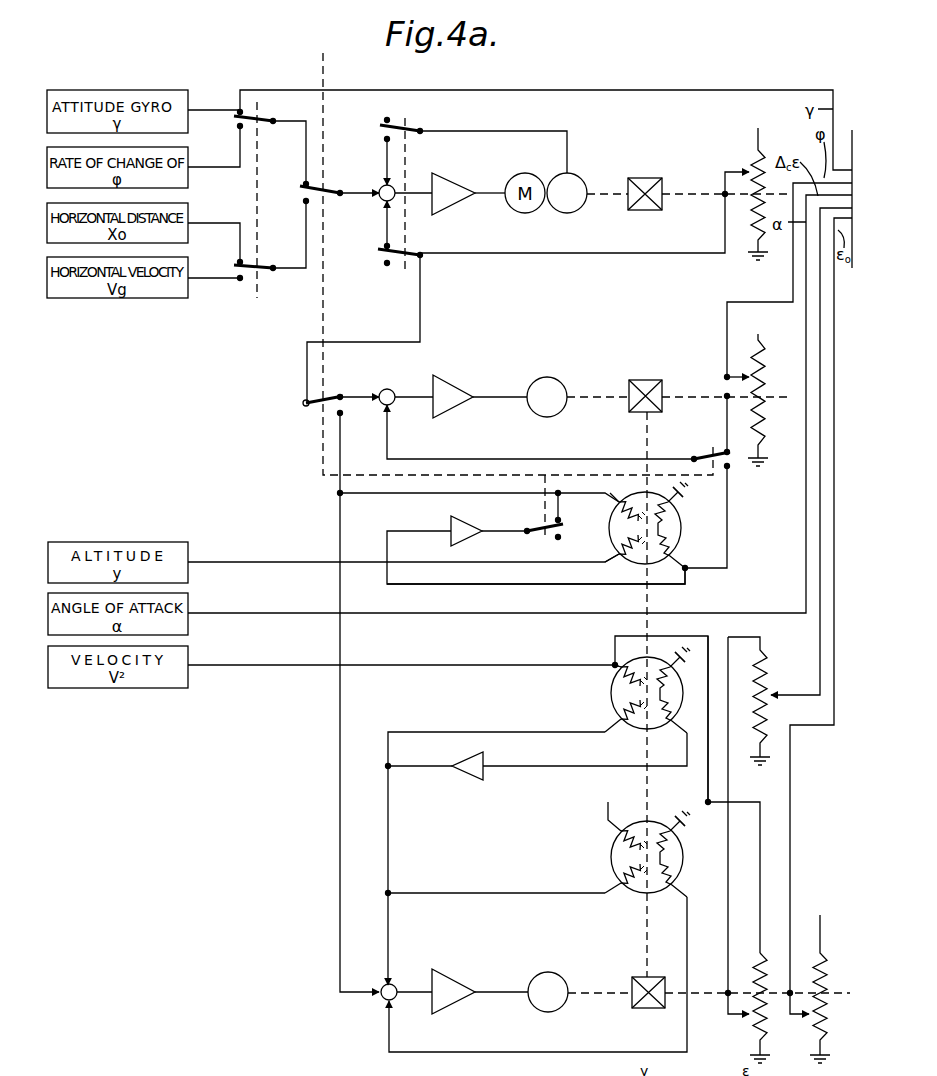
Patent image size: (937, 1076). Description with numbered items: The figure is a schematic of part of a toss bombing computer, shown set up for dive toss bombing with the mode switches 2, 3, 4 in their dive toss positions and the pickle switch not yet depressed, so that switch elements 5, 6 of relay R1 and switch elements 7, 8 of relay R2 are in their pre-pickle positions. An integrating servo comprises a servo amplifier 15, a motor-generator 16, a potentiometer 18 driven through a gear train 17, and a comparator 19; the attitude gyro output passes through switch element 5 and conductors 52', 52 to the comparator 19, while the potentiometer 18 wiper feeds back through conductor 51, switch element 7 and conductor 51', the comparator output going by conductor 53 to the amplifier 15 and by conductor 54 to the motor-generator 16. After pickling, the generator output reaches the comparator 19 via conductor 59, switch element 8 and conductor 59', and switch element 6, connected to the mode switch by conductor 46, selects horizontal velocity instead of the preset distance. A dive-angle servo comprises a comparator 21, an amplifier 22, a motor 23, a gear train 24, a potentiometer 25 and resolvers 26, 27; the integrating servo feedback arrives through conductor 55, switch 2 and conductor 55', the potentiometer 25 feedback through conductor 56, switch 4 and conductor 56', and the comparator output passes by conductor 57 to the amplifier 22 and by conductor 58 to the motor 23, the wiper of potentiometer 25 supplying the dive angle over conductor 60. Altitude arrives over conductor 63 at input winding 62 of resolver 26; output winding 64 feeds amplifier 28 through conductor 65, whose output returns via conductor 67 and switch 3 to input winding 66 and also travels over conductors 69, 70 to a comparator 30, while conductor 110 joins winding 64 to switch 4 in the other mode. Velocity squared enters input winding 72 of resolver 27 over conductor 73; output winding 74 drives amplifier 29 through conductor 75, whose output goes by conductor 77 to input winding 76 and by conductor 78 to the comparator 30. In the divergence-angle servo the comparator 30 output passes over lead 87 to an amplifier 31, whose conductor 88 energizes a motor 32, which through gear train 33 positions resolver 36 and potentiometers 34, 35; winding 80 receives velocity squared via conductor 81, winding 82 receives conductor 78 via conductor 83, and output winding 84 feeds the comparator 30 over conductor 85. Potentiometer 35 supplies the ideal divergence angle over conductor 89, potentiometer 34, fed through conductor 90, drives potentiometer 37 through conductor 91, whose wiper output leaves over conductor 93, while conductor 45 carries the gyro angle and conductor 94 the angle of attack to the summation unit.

The manually positionable switch 2 is at (317, 396).
The manually positionable switch 3 is at (527, 527).
The manually positionable switch 4 is at (702, 455).
The switch element 5 is at (261, 118).
The switch element 6 is at (261, 263).
The switch element 7 is at (410, 246).
The switch element 8 is at (408, 122).
The relay R1 is at (253, 204).
The relay R2 is at (400, 205).
The servo amplifier 15 is at (457, 181).
The motor-generator 16 is at (548, 170).
The gear train 17 is at (654, 176).
The potentiometer 18 is at (754, 165).
The comparator 19 is at (382, 186).
The comparator 21 is at (389, 388).
The amplifier 22 is at (471, 381).
The motor 23 is at (553, 377).
The gear train 24 is at (655, 378).
The potentiometer 25 is at (756, 364).
The resolver 26 is at (680, 531).
The resolver 27 is at (610, 698).
The amplifier 28 is at (446, 520).
The amplifier 29 is at (469, 760).
The comparator 30 is at (381, 984).
The amplifier 31 is at (462, 982).
The motor 32 is at (554, 970).
The gear train 33 is at (640, 974).
The potentiometer 34 is at (758, 946).
The potentiometer 35 is at (818, 948).
The resolver 36 is at (610, 856).
The potentiometer 37 is at (769, 673).
The conductor 45 is at (633, 88).
The conductor 46 is at (298, 270).
The conductor 51 is at (572, 223).
The conductor 51' is at (362, 223).
The conductor 52 is at (331, 174).
The conductor 52' is at (287, 152).
The conductor 53 is at (412, 185).
The conductor 54 is at (484, 198).
The conductor 55 is at (390, 329).
The conductor 55' is at (359, 375).
The conductor 56 is at (707, 424).
The conductor 56' is at (540, 432).
The conductor 57 is at (418, 391).
The conductor 58 is at (510, 393).
The conductor 59 is at (493, 136).
The conductor 59' is at (368, 156).
The conductor 60 is at (793, 284).
The input winding 62 is at (612, 544).
The conductor 63 is at (286, 560).
The output winding 64 is at (660, 525).
The conductor 65 is at (583, 576).
The input winding 66 is at (612, 512).
The conductor 67 is at (591, 490).
The conductor 69 is at (432, 496).
The conductor 70 is at (336, 528).
The input winding 72 is at (614, 676).
The conductor 73 is at (540, 662).
The output winding 74 is at (668, 695).
The conductor 75 is at (593, 766).
The input winding 76 is at (628, 724).
The conductor 77 is at (522, 730).
The conductor 78 is at (388, 838).
The input winding 80 is at (614, 836).
The conductor 81 is at (708, 786).
The input winding 82 is at (612, 871).
The conductor 83 is at (505, 890).
The output winding 84 is at (668, 859).
The conductor 85 is at (687, 956).
The lead 87 is at (418, 988).
The conductor 88 is at (505, 988).
The conductor 89 is at (790, 806).
The conductor 90 is at (760, 872).
The conductor 91 is at (734, 788).
The conductor 93 is at (820, 537).
The conductor 94 is at (806, 575).
The conductor 110 is at (727, 504).